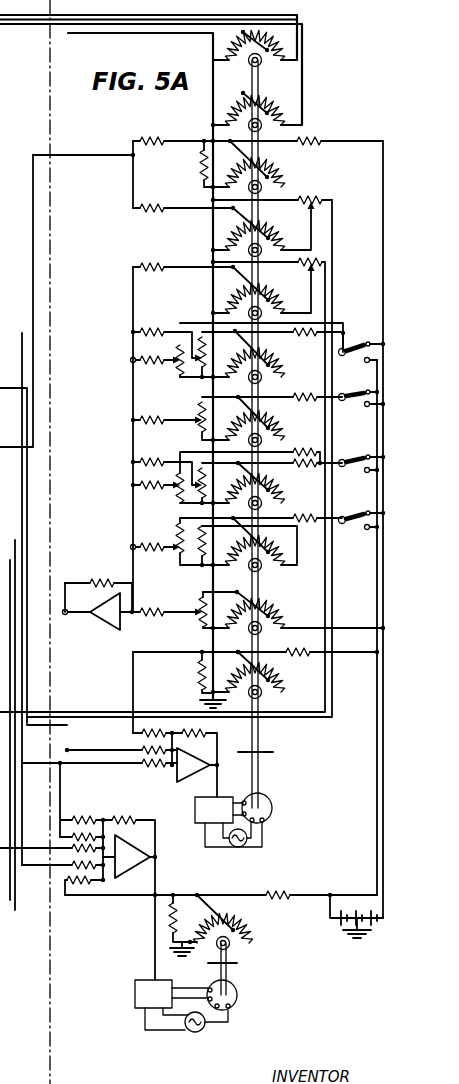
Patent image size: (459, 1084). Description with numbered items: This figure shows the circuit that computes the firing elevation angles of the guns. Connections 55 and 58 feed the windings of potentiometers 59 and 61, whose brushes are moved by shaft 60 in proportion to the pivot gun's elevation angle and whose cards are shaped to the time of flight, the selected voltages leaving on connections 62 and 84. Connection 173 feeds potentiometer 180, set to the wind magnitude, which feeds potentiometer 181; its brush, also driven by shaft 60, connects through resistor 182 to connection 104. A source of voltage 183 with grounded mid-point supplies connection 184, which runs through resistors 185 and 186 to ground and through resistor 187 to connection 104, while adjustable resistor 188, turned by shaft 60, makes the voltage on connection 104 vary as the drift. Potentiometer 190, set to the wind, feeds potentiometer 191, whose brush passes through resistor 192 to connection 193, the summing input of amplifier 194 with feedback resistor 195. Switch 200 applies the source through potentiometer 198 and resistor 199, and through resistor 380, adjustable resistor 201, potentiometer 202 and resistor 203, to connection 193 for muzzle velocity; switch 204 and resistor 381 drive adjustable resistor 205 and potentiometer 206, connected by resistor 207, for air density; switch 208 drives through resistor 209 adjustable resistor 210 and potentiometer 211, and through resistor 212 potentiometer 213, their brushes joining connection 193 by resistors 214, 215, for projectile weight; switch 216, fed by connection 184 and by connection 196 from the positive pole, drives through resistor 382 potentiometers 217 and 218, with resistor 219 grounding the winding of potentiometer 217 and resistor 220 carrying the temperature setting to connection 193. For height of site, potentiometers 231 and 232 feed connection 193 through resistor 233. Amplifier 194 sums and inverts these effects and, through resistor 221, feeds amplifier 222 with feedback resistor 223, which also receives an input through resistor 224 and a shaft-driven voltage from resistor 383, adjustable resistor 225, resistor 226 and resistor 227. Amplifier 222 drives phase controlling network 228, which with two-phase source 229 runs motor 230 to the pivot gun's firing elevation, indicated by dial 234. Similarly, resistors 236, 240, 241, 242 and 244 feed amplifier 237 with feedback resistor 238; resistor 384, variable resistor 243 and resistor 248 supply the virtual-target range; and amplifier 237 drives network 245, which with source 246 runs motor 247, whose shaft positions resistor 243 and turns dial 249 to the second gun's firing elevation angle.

The connection 55 is at (298, 42).
The connection 58 is at (303, 96).
The potentiometer 59 is at (229, 47).
The shaft 60 is at (259, 76).
The potentiometer 61 is at (229, 104).
The connection 62 is at (118, 27).
The connection 84 is at (69, 33).
The connection 104 is at (88, 156).
The connection 173 is at (332, 240).
The potentiometer 180 is at (302, 198).
The potentiometer 181 is at (268, 231).
The resistor 182 is at (141, 209).
The source of voltage 183 is at (338, 930).
The connection 184 is at (384, 283).
The resistor 185 is at (317, 138).
The resistor 186 is at (201, 163).
The resistor 187 is at (141, 137).
The adjustable resistor 188 is at (284, 164).
The potentiometer 190 is at (319, 262).
The potentiometer 191 is at (268, 294).
The resistor 192 is at (141, 270).
The connection 193 is at (133, 393).
The amplifier 194 is at (109, 624).
The feedback resistor 195 is at (108, 580).
The connection 196 is at (377, 567).
The potentiometer 198 is at (200, 374).
The resistor 199 is at (141, 364).
The switch 200 is at (341, 356).
The adjustable resistor 201 is at (280, 368).
The potentiometer 202 is at (240, 338).
The resistor 203 is at (141, 328).
The switch 204 is at (341, 401).
The adjustable resistor 205 is at (280, 432).
The potentiometer 206 is at (202, 430).
The resistor 207 is at (160, 412).
The switch 208 is at (341, 467).
The resistor 209 is at (291, 466).
The adjustable resistor 210 is at (282, 499).
The potentiometer 211 is at (200, 498).
The resistor 212 is at (320, 448).
The potentiometer 213 is at (172, 490).
The resistor 214 is at (158, 462).
The resistor 215 is at (133, 475).
The switch 216 is at (341, 524).
The potentiometer 217 is at (270, 568).
The potentiometer 218 is at (178, 556).
The resistor 219 is at (203, 558).
The resistor 220 is at (142, 546).
The resistor 221 is at (140, 746).
The amplifier 222 is at (182, 775).
The feedback resistor 223 is at (210, 735).
The resistor 224 is at (142, 766).
The adjustable resistor 225 is at (280, 682).
The resistor 226 is at (200, 668).
The resistor 227 is at (139, 713).
The phase controlling network 228 is at (195, 808).
The two-phase source of power 229 is at (240, 848).
The two-phase motor 230 is at (271, 804).
The potentiometer 231 is at (277, 604).
The potentiometer 232 is at (202, 622).
The resistor 233 is at (140, 614).
The dial 234 is at (262, 750).
The resistor 236 is at (68, 868).
The amplifier 237 is at (120, 863).
The feedback resistor 238 is at (120, 816).
The resistor 240 is at (66, 847).
The resistor 241 is at (66, 834).
The resistor 242 is at (98, 815).
The variable resistor 243 is at (250, 932).
The resistor 244 is at (87, 883).
The phase controlling network 245 is at (135, 996).
The source of two-phase power 246 is at (190, 1032).
The two-phase motor 247 is at (237, 995).
The resistor 248 is at (170, 920).
The dial 249 is at (226, 960).
The resistor 380 is at (299, 337).
The resistor 381 is at (309, 395).
The resistor 382 is at (299, 523).
The resistor 383 is at (308, 648).
The resistor 384 is at (280, 892).